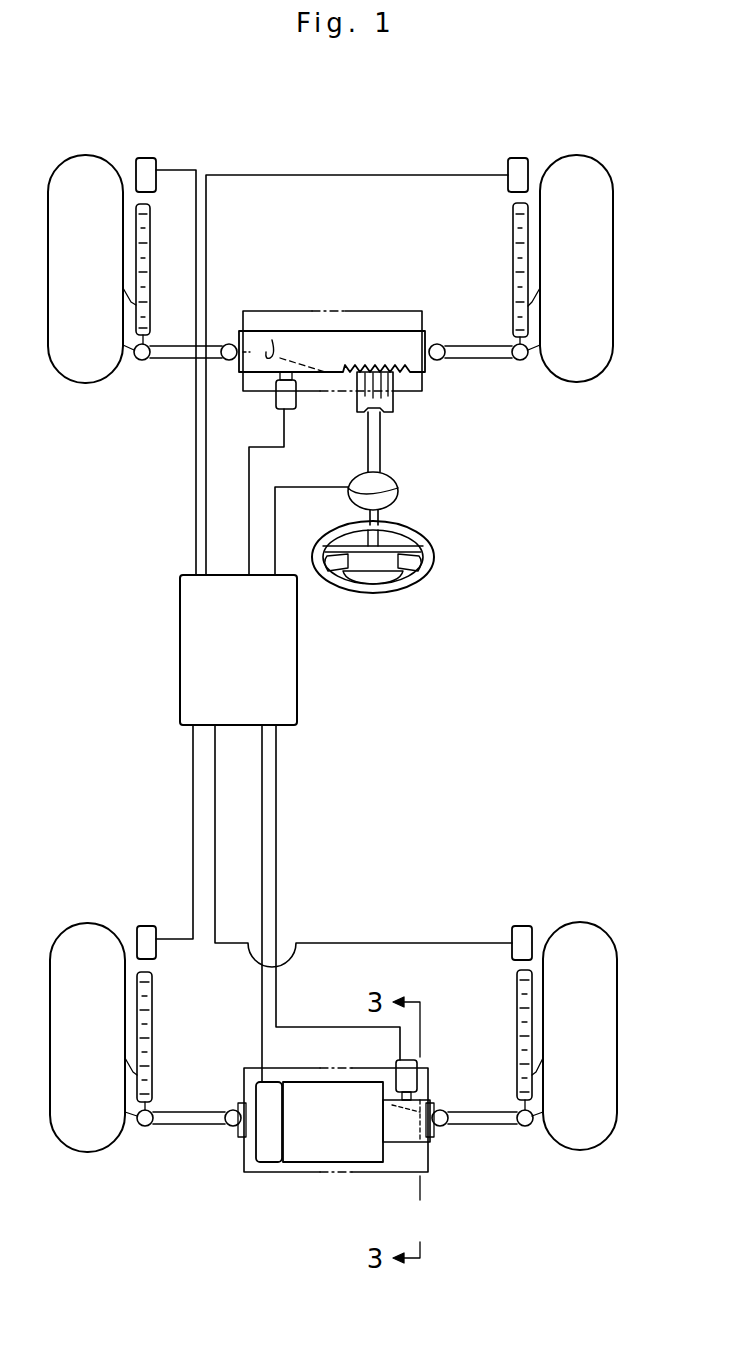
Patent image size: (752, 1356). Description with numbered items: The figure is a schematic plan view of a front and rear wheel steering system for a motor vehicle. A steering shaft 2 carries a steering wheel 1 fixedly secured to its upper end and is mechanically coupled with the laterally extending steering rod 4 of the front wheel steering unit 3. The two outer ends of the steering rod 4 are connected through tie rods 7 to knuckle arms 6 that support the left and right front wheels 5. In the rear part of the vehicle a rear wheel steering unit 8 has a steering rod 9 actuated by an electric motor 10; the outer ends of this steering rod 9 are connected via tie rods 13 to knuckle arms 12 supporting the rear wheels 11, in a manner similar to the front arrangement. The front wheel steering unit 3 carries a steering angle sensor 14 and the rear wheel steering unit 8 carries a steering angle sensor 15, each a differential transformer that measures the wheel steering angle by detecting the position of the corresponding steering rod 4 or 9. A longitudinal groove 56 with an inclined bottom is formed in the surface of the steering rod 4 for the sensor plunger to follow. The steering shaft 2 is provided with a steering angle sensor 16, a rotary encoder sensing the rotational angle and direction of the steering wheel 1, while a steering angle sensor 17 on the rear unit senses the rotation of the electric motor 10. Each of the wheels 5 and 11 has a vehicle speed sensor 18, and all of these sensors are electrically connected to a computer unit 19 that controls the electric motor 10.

The steering wheel 1 is at (434, 560).
The steering shaft 2 is at (381, 452).
The front wheel steering unit 3 is at (382, 311).
The steering rod 4 is at (300, 331).
The front wheels 5 is at (86, 155).
The knuckle arms 6 is at (128, 362).
The tie rods 7 is at (175, 360).
The rear wheel steering unit 8 is at (378, 1175).
The steering rod 9 is at (407, 1175).
The electric motor 10 is at (317, 1155).
The rear wheels 11 is at (82, 922).
The knuckle arms 12 is at (131, 1125).
The tie rods 13 is at (191, 1125).
The steering angle sensor 14 is at (275, 400).
The steering angle sensor 15 is at (419, 1065).
The steering angle sensor 16 is at (398, 487).
The steering angle sensor 17 is at (263, 1160).
The vehicle speed sensor 18 is at (145, 157).
The computer unit 19 is at (218, 666).
The longitudinal groove 56 is at (272, 340).